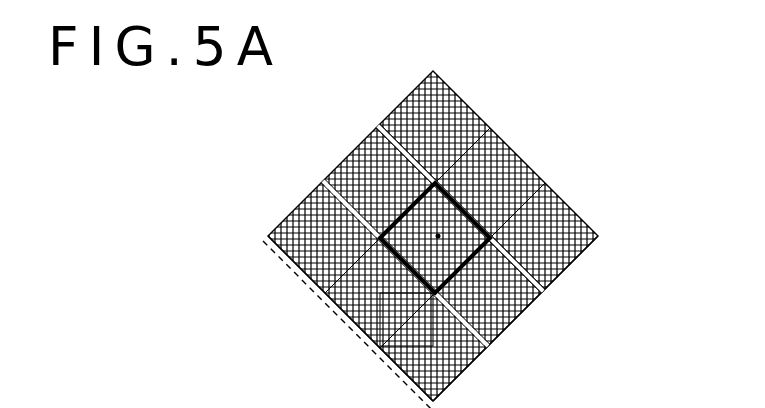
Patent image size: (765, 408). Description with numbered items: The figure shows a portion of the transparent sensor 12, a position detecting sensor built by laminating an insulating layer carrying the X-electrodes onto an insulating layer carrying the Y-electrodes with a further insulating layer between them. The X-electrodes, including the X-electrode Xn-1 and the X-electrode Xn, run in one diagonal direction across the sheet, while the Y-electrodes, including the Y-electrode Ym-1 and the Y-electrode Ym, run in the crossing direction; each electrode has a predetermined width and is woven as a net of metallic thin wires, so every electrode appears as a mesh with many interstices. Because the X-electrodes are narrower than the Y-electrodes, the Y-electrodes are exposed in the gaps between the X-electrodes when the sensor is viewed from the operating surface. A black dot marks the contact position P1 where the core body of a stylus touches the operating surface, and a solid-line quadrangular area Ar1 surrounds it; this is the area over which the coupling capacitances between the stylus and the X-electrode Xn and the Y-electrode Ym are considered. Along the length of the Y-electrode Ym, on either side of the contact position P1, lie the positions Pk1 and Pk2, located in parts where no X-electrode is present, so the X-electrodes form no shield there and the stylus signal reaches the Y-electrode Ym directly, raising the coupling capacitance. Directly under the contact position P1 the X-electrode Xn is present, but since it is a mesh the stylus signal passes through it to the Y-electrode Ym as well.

The transparent sensor 12 is at (294, 198).
The contact position P1 is at (340, 311).
The quadrangular area Ar1 is at (391, 320).
The position Pk1 is at (357, 153).
The position Pk2 is at (536, 291).
The X-electrode Xn-1 is at (433, 182).
The X-electrode Xn is at (470, 238).
The Y-electrode Ym-1 is at (404, 322).
The Y-electrode Ym is at (443, 266).